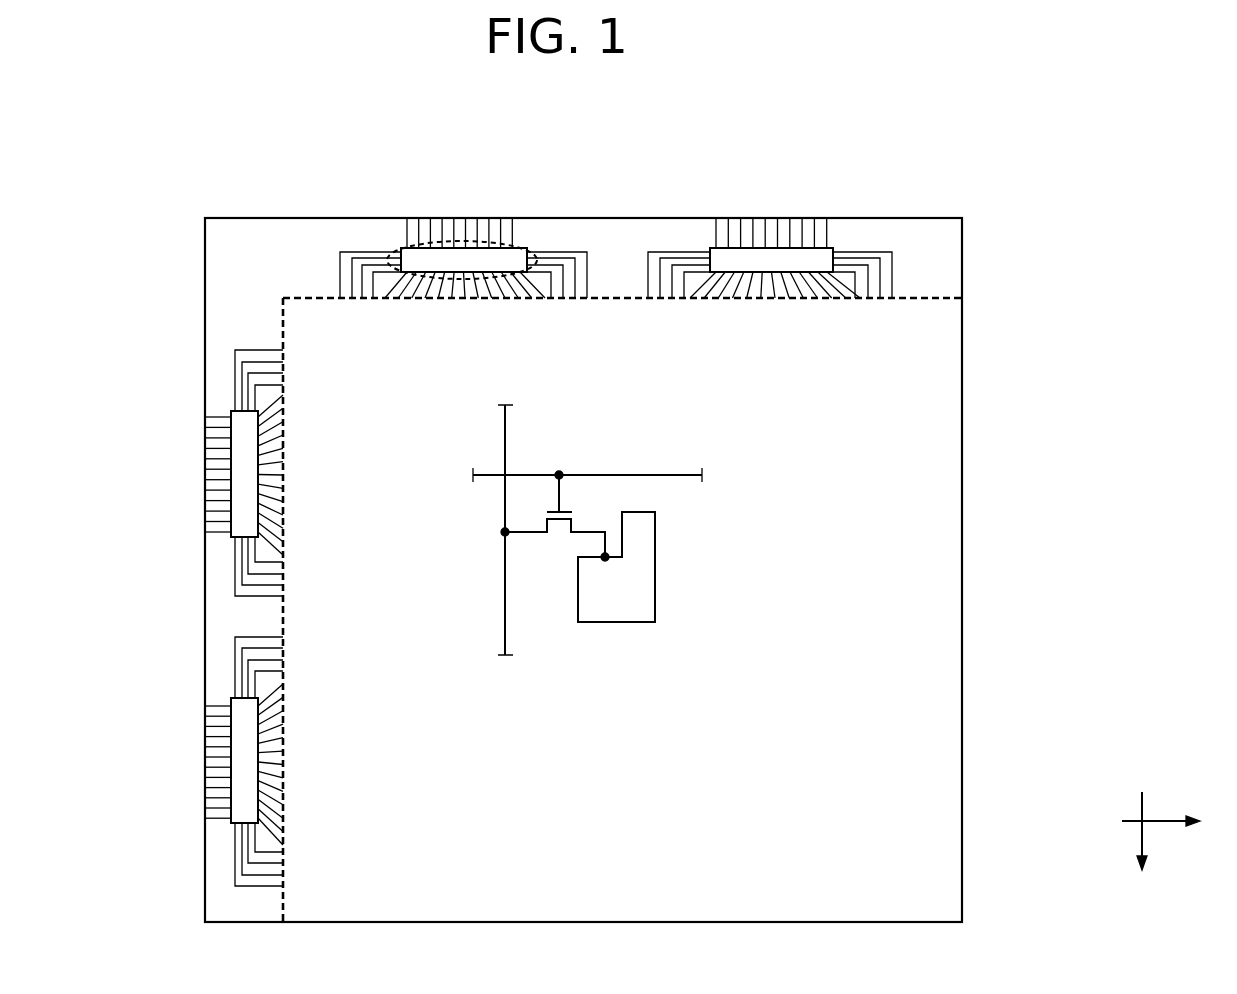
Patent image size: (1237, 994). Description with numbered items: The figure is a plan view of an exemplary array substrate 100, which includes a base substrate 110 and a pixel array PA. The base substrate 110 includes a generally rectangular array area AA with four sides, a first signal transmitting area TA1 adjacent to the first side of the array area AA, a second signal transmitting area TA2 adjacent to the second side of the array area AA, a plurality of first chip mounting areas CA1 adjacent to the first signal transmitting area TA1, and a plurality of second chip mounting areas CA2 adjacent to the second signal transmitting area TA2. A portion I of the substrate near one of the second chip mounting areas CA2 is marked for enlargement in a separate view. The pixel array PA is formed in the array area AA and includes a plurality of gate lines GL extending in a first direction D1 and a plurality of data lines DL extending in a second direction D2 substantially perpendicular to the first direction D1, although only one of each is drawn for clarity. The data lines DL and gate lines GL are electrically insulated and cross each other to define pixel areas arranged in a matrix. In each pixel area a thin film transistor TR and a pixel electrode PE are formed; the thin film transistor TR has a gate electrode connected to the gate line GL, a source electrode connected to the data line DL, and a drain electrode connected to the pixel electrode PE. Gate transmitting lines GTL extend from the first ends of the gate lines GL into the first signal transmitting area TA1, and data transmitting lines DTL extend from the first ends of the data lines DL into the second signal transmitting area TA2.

The array substrate 100 is at (517, 129).
The base substrate 110 is at (962, 252).
The array area AA is at (921, 395).
The pixel array PA is at (633, 440).
The first chip mounting area CA1 is at (244, 432).
The second chip mounting area CA2 is at (512, 262).
The first signal transmitting area TA1 is at (262, 846).
The second signal transmitting area TA2 is at (857, 277).
The portion I is at (403, 245).
The data transmitting lines DTL is at (480, 292).
The gate transmitting lines GTL is at (280, 455).
The data line DL is at (507, 440).
The gate line GL is at (680, 473).
The thin film transistor TR is at (524, 511).
The pixel electrode PE is at (655, 588).
The first direction D1 is at (1179, 822).
The second direction D2 is at (1142, 849).